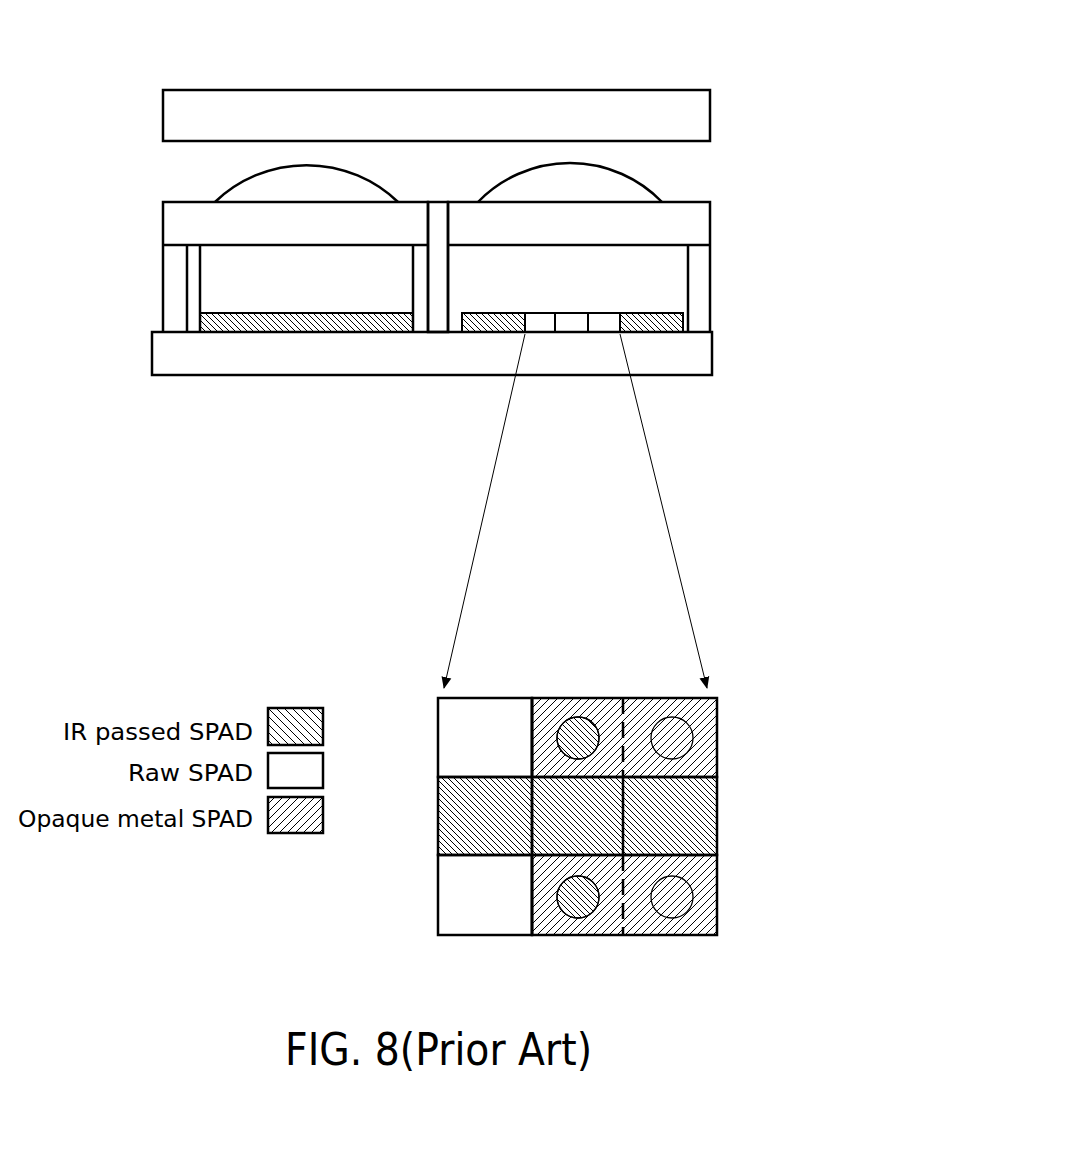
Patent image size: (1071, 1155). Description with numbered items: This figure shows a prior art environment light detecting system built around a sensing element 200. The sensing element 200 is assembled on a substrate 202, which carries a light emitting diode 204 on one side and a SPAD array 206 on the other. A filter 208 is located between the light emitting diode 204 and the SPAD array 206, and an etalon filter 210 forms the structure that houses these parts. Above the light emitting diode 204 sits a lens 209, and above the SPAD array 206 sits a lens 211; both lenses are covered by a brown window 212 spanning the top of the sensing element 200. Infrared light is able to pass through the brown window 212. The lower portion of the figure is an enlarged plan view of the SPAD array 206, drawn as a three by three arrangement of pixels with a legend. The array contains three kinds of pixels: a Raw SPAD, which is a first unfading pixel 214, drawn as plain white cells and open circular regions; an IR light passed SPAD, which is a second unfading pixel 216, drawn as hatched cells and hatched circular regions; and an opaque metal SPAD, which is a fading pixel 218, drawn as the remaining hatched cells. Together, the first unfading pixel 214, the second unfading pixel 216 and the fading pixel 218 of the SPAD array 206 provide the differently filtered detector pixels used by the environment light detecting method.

The sensing element 200 is at (670, 52).
The substrate 202 is at (703, 358).
The light emitting diode 204 is at (193, 303).
The SPAD array 206 is at (650, 313).
The filter 208 is at (413, 202).
The lens 209 is at (228, 185).
The etalon filter 210 is at (700, 207).
The lens 211 is at (650, 183).
The brown window 212 is at (530, 90).
The first unfading pixel 214 is at (442, 742).
The second unfading pixel 216 is at (562, 730).
The fading pixel 218 is at (640, 690).